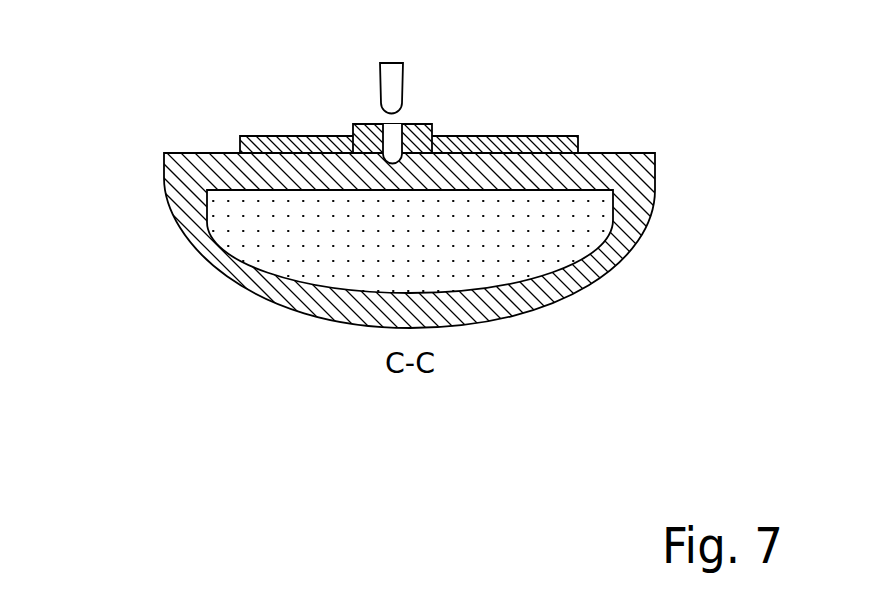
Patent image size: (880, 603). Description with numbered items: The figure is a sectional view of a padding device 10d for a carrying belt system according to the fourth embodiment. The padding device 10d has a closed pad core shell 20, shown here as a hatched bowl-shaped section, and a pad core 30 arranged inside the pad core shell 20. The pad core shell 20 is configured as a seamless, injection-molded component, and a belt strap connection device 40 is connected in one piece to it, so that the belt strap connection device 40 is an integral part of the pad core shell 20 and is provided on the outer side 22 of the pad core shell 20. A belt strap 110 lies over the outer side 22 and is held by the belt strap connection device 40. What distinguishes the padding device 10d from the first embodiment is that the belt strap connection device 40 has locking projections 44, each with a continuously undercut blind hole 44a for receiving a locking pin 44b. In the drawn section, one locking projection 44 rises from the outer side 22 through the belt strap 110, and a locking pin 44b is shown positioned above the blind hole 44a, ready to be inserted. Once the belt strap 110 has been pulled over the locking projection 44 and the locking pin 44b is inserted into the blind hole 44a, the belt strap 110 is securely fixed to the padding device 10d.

The padding device 10d is at (424, 168).
The pad core shell 20 is at (592, 301).
The outer side 22 is at (610, 153).
The pad core 30 is at (578, 222).
The belt strap 110 is at (242, 136).
The belt strap connection device 40 is at (393, 85).
The locking projection 44 is at (352, 133).
The blind hole 44a is at (397, 119).
The locking pin 44b is at (404, 78).